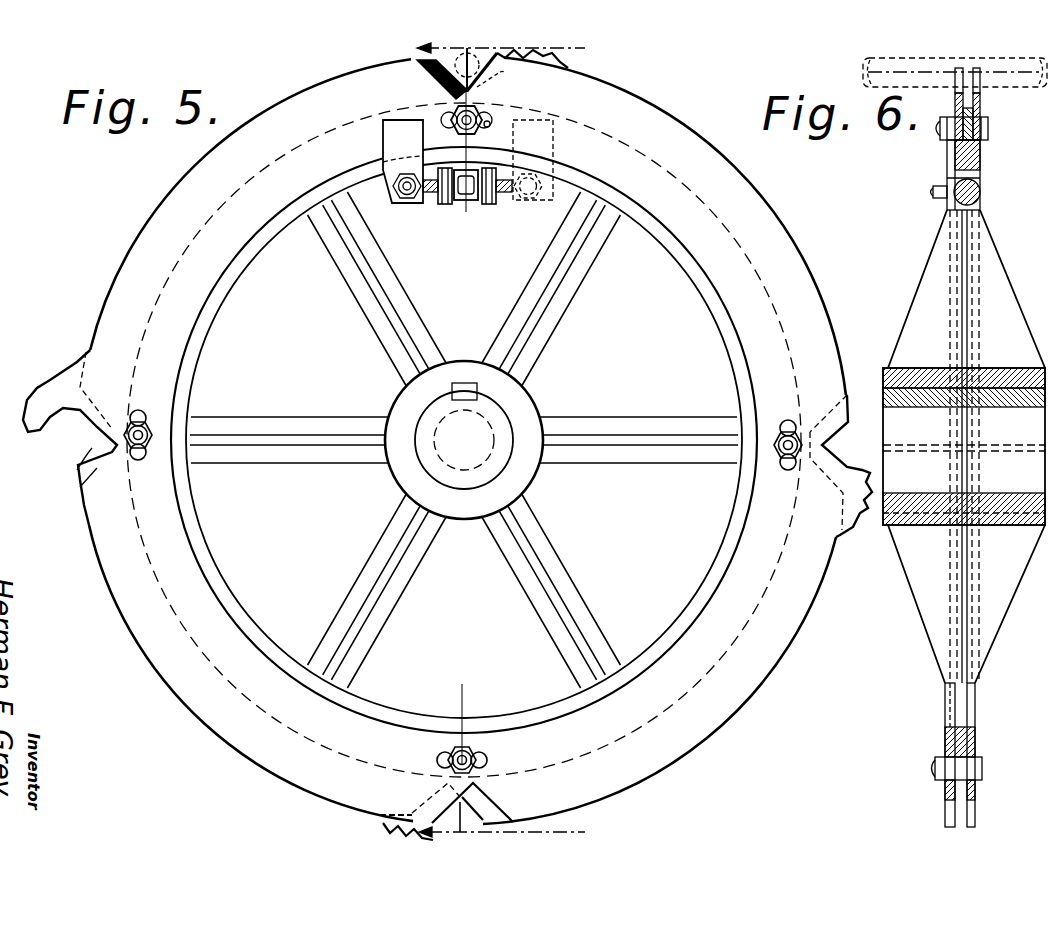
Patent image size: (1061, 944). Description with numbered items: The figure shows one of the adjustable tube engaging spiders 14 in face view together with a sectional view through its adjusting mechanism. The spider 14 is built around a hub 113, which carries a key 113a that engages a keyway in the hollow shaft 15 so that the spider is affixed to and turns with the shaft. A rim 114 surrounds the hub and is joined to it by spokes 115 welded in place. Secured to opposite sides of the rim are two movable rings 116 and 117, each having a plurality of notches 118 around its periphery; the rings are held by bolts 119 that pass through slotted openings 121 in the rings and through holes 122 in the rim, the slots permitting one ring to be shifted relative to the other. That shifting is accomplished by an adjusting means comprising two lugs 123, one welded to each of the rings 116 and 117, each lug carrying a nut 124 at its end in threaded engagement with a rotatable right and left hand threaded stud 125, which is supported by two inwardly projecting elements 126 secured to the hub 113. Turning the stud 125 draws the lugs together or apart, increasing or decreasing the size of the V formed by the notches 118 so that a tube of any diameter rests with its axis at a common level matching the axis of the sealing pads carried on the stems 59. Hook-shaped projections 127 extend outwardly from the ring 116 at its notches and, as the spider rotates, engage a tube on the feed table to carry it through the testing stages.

In FIG. 5, the adjustable tube engaging spider 14 is at (174, 192).
In FIG. 6, the adjustable tube engaging spider 14 is at (1035, 282).
In FIG. 5, the hollow shaft 15 is at (480, 466).
In FIG. 5, the sealing pad stem 59 is at (455, 72).
In FIG. 6, the sealing pad stem 59 is at (866, 68).
In FIG. 5, the hub 113 is at (528, 416).
In FIG. 6, the hub 113 is at (918, 370).
In FIG. 5, the key 113a is at (478, 392).
In FIG. 6, the key 113a is at (918, 400).
In FIG. 5, the rim 114 is at (660, 236).
In FIG. 6, the rim 114 is at (980, 162).
In FIG. 5, the spokes 115 is at (567, 292).
In FIG. 6, the spokes 115 is at (972, 282).
In FIG. 5, the movable ring 116 is at (420, 68).
In FIG. 6, the movable ring 116 is at (955, 76).
In FIG. 5, the movable ring 117 is at (503, 75).
In FIG. 6, the movable ring 117 is at (980, 75).
In FIG. 5, the notches 118 is at (77, 470).
In FIG. 6, the notches 118 is at (985, 86).
In FIG. 5, the bolts 119 is at (490, 123).
In FIG. 6, the bolts 119 is at (940, 128).
In FIG. 5, the slotted openings 121 is at (488, 126).
In FIG. 6, the slotted openings 121 is at (990, 126).
In FIG. 6, the holes 122 is at (957, 150).
In FIG. 5, the lugs 123 is at (383, 140).
In FIG. 6, the lugs 123 is at (948, 170).
In FIG. 5, the nut 124 is at (407, 198).
In FIG. 6, the nut 124 is at (933, 194).
In FIG. 5, the right and left hand threaded stud 125 is at (466, 202).
In FIG. 6, the right and left hand threaded stud 125 is at (979, 186).
In FIG. 5, the inwardly projecting elements 126 is at (446, 204).
In FIG. 6, the inwardly projecting elements 126 is at (981, 204).
In FIG. 5, the hook-shaped projections 127 is at (42, 390).